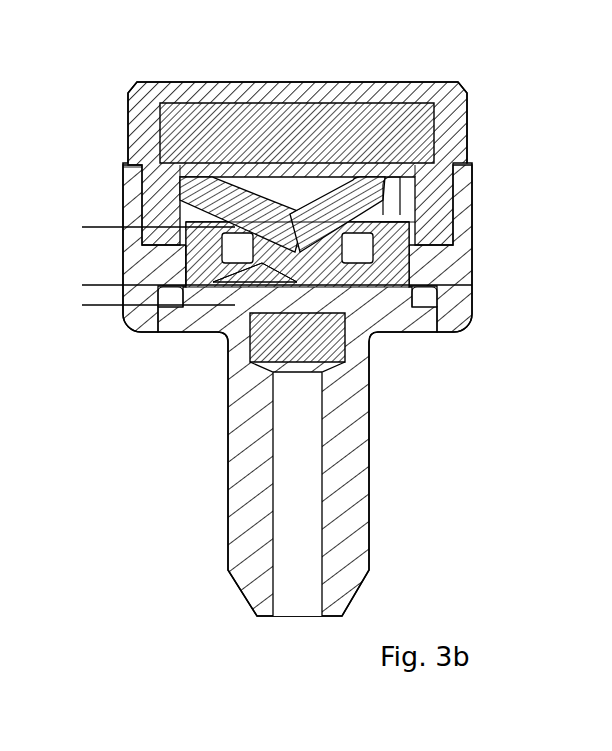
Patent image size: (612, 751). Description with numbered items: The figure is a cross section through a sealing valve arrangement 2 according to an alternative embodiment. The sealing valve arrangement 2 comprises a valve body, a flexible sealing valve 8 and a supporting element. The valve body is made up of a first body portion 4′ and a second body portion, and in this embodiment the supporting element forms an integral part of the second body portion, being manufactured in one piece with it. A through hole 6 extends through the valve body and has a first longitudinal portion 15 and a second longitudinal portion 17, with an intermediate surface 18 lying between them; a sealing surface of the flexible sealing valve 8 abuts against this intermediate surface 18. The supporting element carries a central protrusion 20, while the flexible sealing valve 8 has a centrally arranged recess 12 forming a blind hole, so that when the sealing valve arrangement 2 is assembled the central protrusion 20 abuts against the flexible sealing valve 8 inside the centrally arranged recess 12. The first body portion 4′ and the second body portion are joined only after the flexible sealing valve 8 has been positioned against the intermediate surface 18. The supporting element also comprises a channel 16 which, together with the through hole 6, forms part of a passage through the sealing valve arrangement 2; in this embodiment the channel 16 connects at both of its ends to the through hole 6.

The sealing valve arrangement 2 is at (480, 57).
The first body portion 4′ is at (456, 307).
The through hole 6 is at (295, 602).
The flexible sealing valve 8 is at (308, 262).
The centrally arranged recess 12 is at (300, 284).
The first longitudinal portion 15 is at (100, 288).
The channel 16 is at (410, 200).
The second longitudinal portion 17 is at (100, 230).
The intermediate surface 18 is at (207, 280).
The central protrusion 20 is at (305, 244).